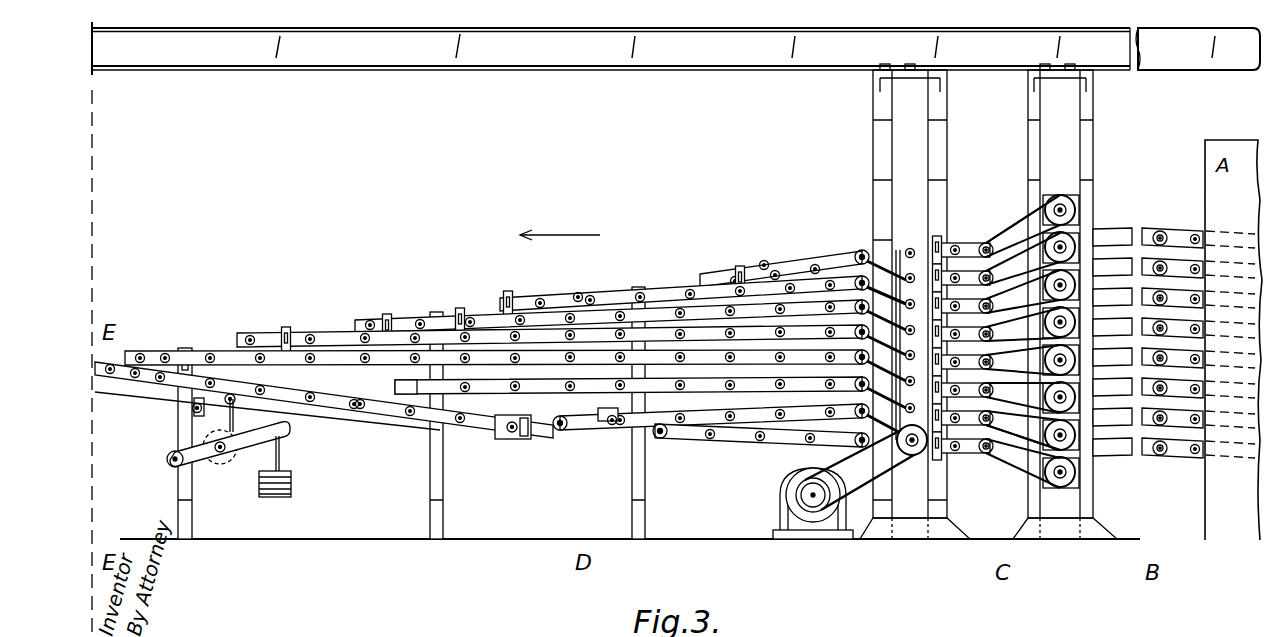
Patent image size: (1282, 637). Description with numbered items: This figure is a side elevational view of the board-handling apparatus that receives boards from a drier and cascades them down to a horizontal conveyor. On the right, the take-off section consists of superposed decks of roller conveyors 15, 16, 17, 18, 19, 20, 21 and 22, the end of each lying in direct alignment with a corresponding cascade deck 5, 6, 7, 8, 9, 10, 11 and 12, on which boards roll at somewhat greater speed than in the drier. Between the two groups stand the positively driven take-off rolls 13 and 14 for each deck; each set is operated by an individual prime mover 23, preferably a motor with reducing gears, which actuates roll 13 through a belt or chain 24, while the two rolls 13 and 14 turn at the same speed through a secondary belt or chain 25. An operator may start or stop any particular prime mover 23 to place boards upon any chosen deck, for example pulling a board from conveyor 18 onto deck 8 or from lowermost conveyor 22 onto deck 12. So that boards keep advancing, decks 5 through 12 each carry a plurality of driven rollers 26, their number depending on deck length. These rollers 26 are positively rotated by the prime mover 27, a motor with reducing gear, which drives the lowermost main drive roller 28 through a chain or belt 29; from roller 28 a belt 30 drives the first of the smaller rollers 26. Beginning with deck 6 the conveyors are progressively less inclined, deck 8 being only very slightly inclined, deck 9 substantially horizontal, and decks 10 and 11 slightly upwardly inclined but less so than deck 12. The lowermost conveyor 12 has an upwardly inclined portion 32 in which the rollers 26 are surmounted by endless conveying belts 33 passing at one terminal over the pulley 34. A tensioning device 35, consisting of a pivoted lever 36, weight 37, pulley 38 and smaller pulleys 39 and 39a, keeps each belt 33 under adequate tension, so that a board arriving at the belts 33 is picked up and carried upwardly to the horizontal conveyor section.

The cascade deck 5 is at (835, 255).
The cascade deck 6 is at (674, 293).
The cascade deck 7 is at (477, 316).
The cascade deck 8 is at (312, 336).
The cascade deck 9 is at (208, 352).
The cascade deck 10 is at (396, 387).
The cascade deck 11 is at (598, 412).
The cascade deck 12 is at (700, 440).
The take-off roll 13 is at (980, 245).
The take-off roll 14 is at (1025, 226).
The roller conveyor 15 is at (1107, 232).
The roller conveyor 16 is at (1104, 265).
The roller conveyor 17 is at (1104, 295).
The roller conveyor 18 is at (1104, 325).
The roller conveyor 19 is at (1104, 355).
The roller conveyor 20 is at (1104, 386).
The roller conveyor 21 is at (1104, 416).
The roller conveyor 22 is at (1104, 446).
The prime mover 23 is at (1060, 197).
The belt or chain 24 is at (1002, 232).
The secondary belt or chain 25 is at (1005, 460).
The driven roller 26 is at (577, 294).
The prime mover 27 is at (822, 523).
The main drive roller 28 is at (915, 458).
The chain or belt 29 is at (866, 486).
The belt 30 is at (866, 396).
The upwardly inclined portion 32 is at (378, 428).
The endless conveying belt 33 is at (330, 390).
The pulley 34 is at (514, 440).
The tensioning device 35 is at (260, 452).
The lever 36 is at (258, 434).
The weight 37 is at (292, 482).
The pulley 38 is at (220, 464).
The smaller pulley 39 is at (223, 413).
The smaller pulley 39a is at (192, 408).